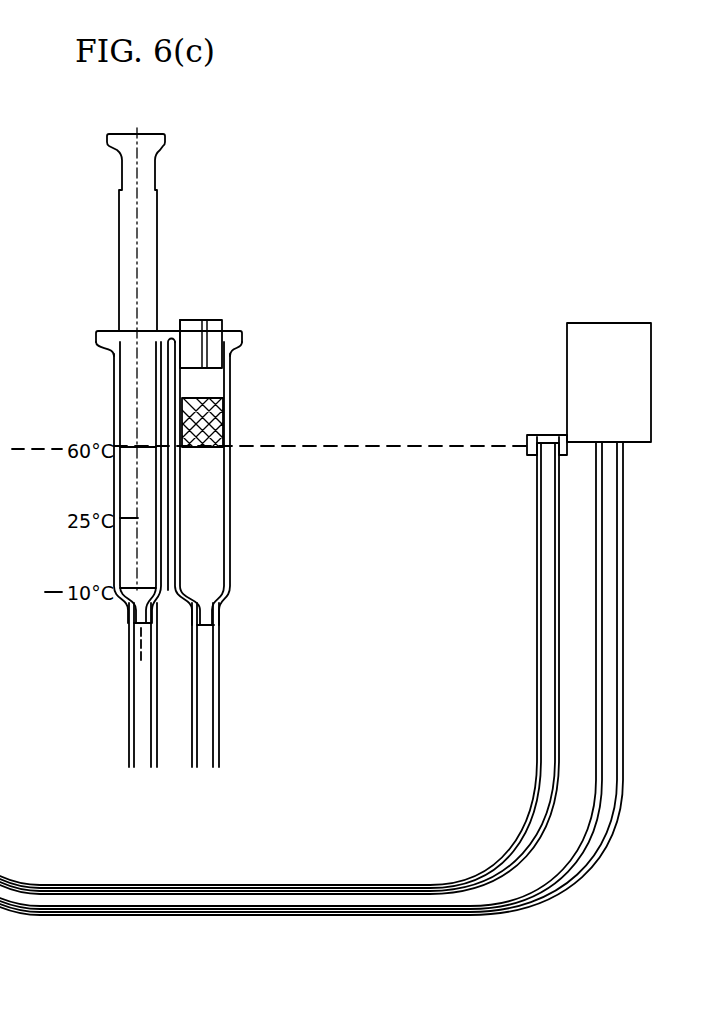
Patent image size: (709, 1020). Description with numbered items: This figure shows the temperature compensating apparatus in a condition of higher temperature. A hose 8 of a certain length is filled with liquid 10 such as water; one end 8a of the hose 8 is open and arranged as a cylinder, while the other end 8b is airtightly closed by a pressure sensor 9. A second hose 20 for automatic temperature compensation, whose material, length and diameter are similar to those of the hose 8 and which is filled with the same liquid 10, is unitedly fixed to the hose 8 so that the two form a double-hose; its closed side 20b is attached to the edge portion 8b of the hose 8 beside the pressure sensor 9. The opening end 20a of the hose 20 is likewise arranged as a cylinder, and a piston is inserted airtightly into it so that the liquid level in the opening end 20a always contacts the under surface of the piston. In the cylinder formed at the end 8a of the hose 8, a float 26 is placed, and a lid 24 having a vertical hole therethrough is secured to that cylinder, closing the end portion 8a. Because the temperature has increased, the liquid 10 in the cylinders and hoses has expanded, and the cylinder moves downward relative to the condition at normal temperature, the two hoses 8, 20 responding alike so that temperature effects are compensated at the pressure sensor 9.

The hose 8 is at (220, 738).
The open end of hose 8a is at (232, 546).
The closed end of hose 8b is at (624, 475).
The pressure sensor 9 is at (645, 410).
The liquid 10 is at (130, 483).
The hose for automatic temperature compensation 20 is at (127, 743).
The opening end of hose 20a is at (113, 550).
The closed side of hose 20b is at (527, 437).
The lid 24 is at (205, 328).
The float 26 is at (215, 424).